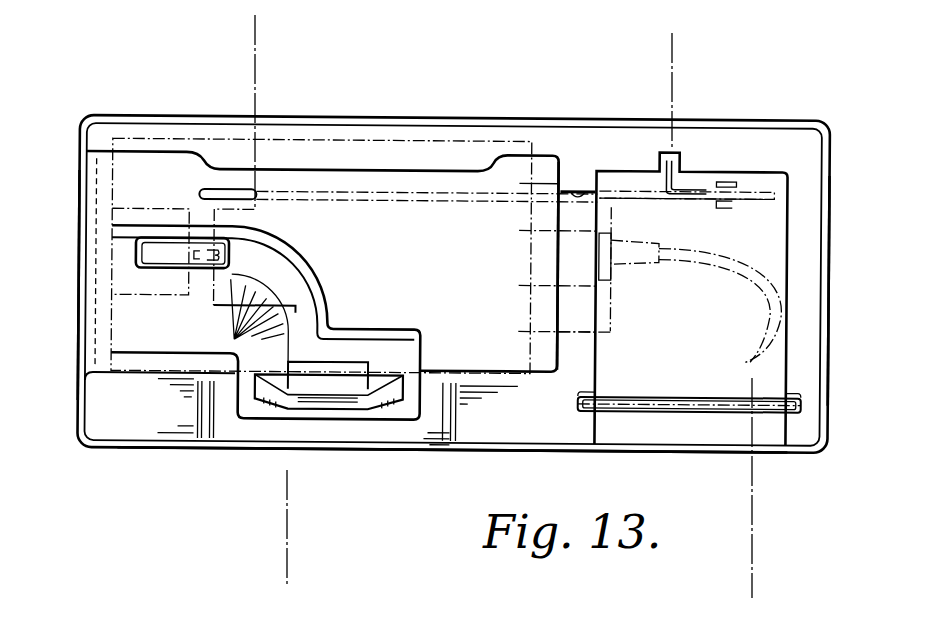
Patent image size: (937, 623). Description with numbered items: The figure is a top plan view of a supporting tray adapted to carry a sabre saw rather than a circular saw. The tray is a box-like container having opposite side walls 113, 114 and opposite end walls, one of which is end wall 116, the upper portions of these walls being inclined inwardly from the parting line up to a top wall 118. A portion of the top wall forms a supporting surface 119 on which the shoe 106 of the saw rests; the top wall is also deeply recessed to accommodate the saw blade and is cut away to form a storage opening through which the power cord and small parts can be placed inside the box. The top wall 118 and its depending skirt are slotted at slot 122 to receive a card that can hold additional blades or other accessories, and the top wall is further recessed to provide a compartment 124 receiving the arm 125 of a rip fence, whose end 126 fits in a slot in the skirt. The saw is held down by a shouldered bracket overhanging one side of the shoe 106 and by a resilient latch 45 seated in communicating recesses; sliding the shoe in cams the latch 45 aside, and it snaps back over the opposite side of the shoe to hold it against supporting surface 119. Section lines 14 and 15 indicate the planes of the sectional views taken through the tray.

The section line 14- 14 is at (290, 46).
The section line 15- 15 is at (712, 63).
The latch 45 is at (347, 361).
The shoe 106 is at (137, 140).
The side wall 113 is at (548, 123).
The side wall 114 is at (560, 452).
The end wall 116 is at (79, 320).
The top wall 118 is at (787, 137).
The supporting surface 119 is at (511, 149).
The slot 122 is at (805, 398).
The compartment 124 is at (575, 186).
The arm 125 is at (457, 197).
The end of the arm 126 is at (683, 162).